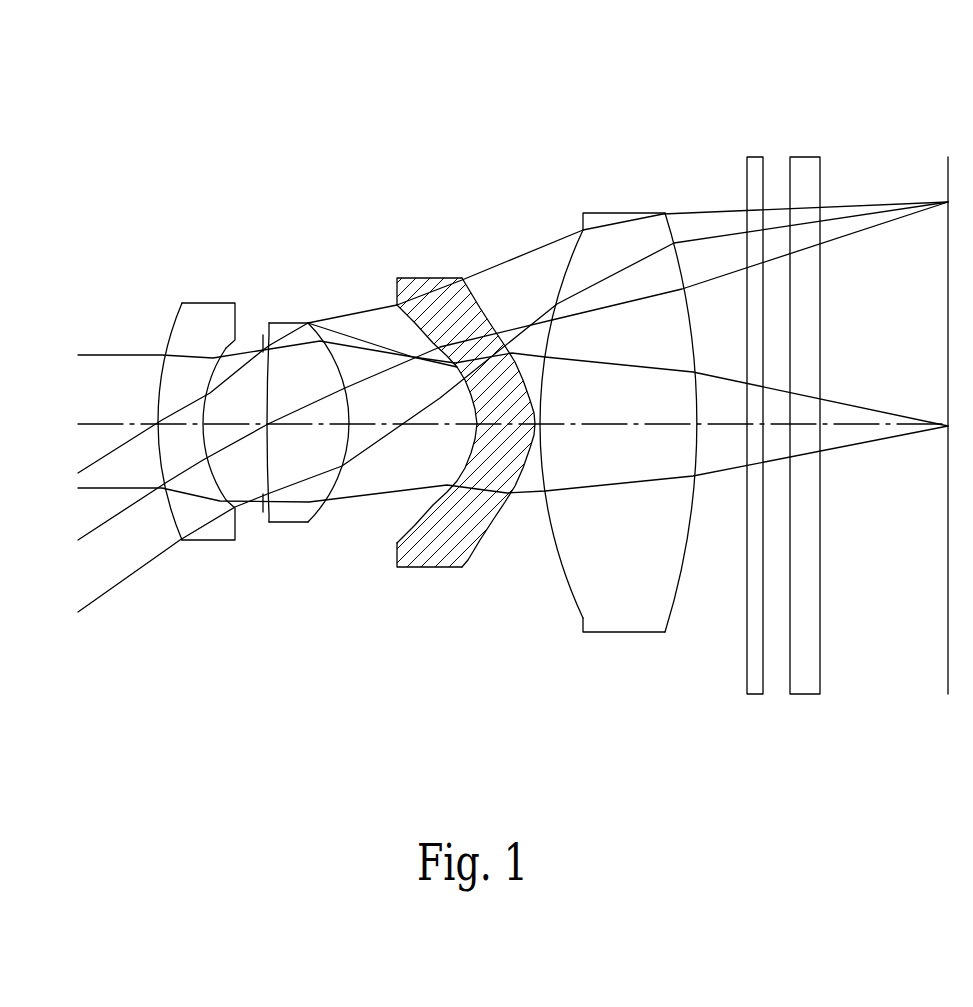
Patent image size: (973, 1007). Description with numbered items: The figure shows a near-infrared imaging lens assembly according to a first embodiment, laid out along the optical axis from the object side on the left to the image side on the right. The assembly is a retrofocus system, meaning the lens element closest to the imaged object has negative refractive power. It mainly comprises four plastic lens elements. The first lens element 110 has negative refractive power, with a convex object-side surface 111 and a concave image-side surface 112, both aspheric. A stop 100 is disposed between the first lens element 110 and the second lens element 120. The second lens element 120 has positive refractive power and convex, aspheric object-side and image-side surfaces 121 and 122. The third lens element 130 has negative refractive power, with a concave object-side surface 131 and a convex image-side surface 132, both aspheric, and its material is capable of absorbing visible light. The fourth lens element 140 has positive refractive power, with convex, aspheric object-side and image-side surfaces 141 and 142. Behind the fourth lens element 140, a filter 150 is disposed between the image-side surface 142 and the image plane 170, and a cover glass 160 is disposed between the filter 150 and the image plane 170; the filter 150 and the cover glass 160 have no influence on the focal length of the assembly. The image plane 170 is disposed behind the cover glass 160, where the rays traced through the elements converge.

The stop 100 is at (263, 342).
The first lens element 110 is at (138, 421).
The object-side surface of the first lens element 111 is at (153, 443).
The image-side surface of the first lens element 112 is at (202, 440).
The second lens element 120 is at (301, 436).
The object-side surface of the second lens element 121 is at (270, 437).
The image-side surface of the second lens element 122 is at (350, 437).
The third lens element 130 is at (467, 429).
The object-side surface of the third lens element 131 is at (468, 455).
The image-side surface of the third lens element 132 is at (533, 457).
The fourth lens element 140 is at (618, 431).
The object-side surface of the fourth lens element 141 is at (545, 481).
The image-side surface of the fourth lens element 142 is at (692, 456).
The filter 150 is at (755, 180).
The cover glass 160 is at (805, 180).
The image plane 170 is at (945, 180).